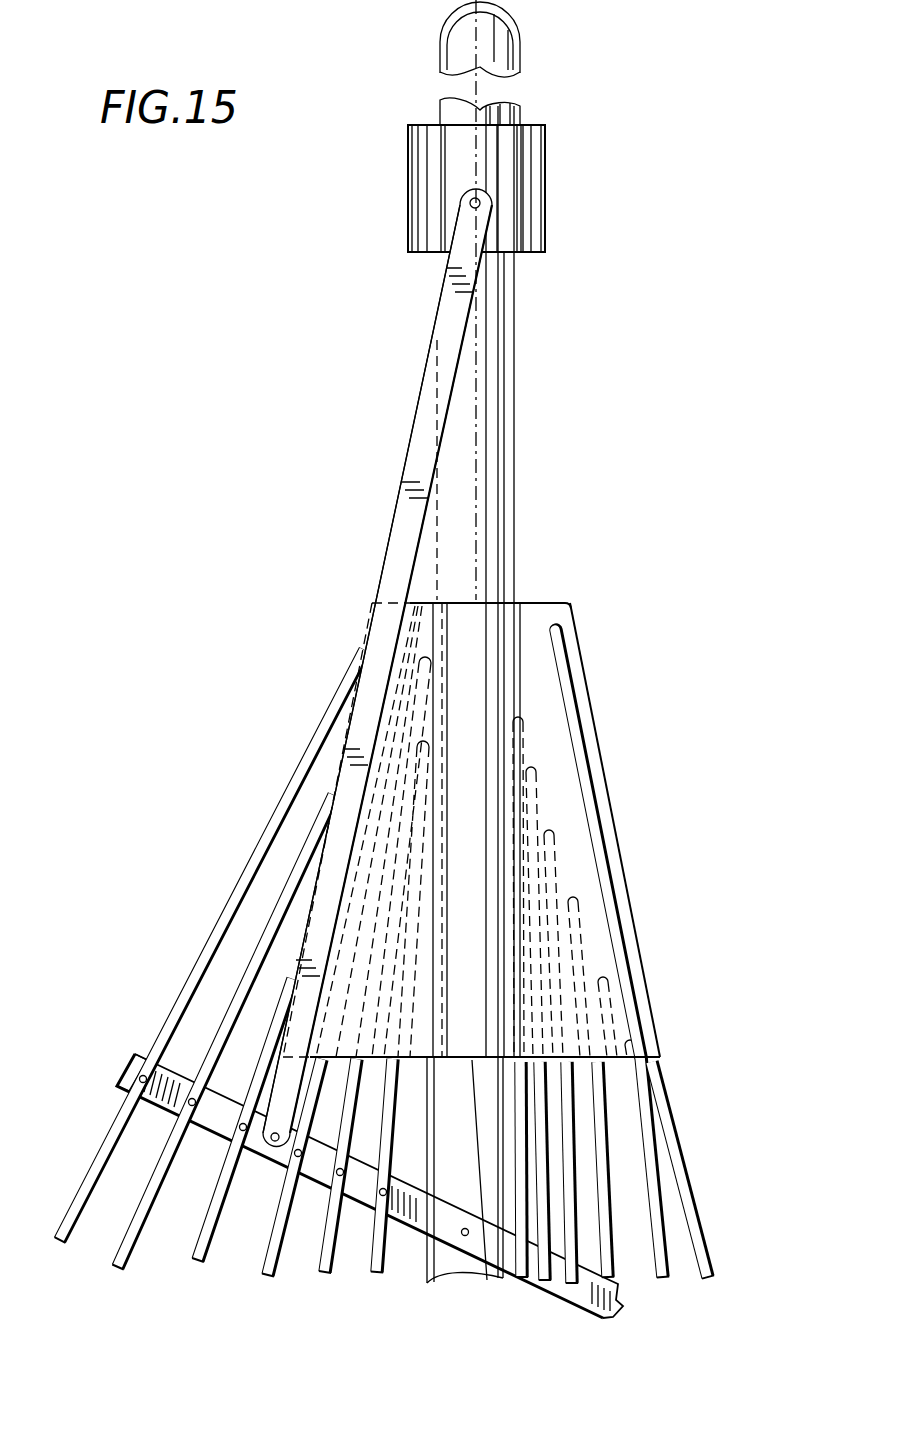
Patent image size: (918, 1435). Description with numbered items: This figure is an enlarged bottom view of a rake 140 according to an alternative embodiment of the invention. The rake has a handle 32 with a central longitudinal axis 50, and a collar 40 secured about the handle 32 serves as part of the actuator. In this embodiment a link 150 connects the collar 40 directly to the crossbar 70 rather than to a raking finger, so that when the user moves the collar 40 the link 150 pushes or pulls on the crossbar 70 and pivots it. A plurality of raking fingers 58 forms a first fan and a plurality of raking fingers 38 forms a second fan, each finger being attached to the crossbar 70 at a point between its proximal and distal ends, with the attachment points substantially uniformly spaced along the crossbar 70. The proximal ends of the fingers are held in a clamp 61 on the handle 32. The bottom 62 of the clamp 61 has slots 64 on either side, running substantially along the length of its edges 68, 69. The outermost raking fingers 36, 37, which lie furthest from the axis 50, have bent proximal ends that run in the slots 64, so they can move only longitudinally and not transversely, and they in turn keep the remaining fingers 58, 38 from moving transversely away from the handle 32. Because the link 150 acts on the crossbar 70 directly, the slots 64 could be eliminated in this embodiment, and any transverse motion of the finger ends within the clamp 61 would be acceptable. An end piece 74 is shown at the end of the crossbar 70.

The rake 140 is at (321, 156).
The central longitudinal axis 50 is at (435, 126).
The handle 32 is at (438, 137).
The collar 40 is at (410, 231).
The link 150 is at (424, 376).
The bottom of clamp 62 is at (497, 808).
The slots 64 is at (609, 953).
The edge of clamp bottom 68 is at (330, 823).
The raking finger 37 is at (212, 945).
The clamp 61 is at (638, 841).
The edge of clamp bottom 69 is at (633, 933).
The crossbar 70 is at (158, 992).
The end block 74 is at (124, 1066).
The raking finger 36 is at (680, 1169).
The raking fingers 38 is at (226, 1031).
The raking fingers 58 is at (612, 1281).